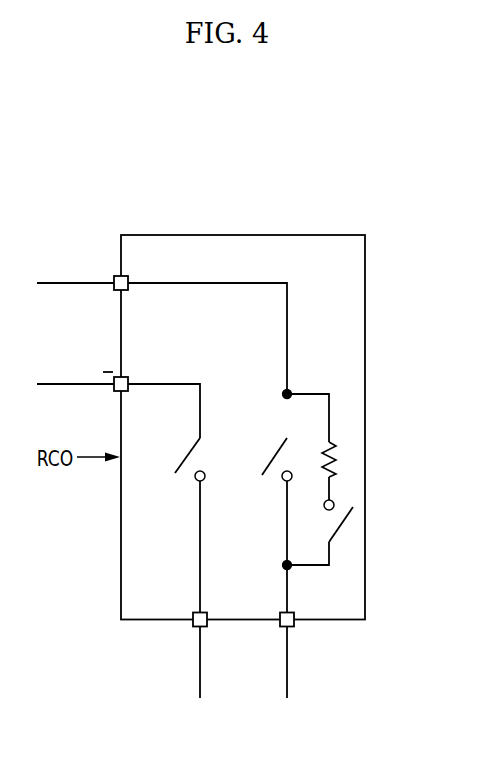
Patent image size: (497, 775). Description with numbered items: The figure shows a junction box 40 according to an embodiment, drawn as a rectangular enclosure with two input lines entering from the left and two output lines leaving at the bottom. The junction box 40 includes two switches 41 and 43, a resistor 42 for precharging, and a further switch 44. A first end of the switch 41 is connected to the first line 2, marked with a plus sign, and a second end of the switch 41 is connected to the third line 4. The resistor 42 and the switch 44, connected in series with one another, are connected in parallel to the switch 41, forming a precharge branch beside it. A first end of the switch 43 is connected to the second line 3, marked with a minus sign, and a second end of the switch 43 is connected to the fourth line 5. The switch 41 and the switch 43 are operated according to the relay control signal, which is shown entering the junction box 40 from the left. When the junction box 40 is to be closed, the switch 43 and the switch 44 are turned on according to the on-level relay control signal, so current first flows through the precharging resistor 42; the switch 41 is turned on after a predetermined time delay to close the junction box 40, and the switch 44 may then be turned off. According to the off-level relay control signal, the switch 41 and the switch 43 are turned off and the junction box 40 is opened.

The junction box 40 is at (237, 235).
The first line 2 is at (57, 283).
The second line 3 is at (57, 384).
The switch 43 is at (186, 456).
The switch 41 is at (271, 460).
The resistor 42 is at (336, 459).
The switch 44 is at (343, 525).
The fourth line 5 is at (199, 668).
The third line 4 is at (287, 668).